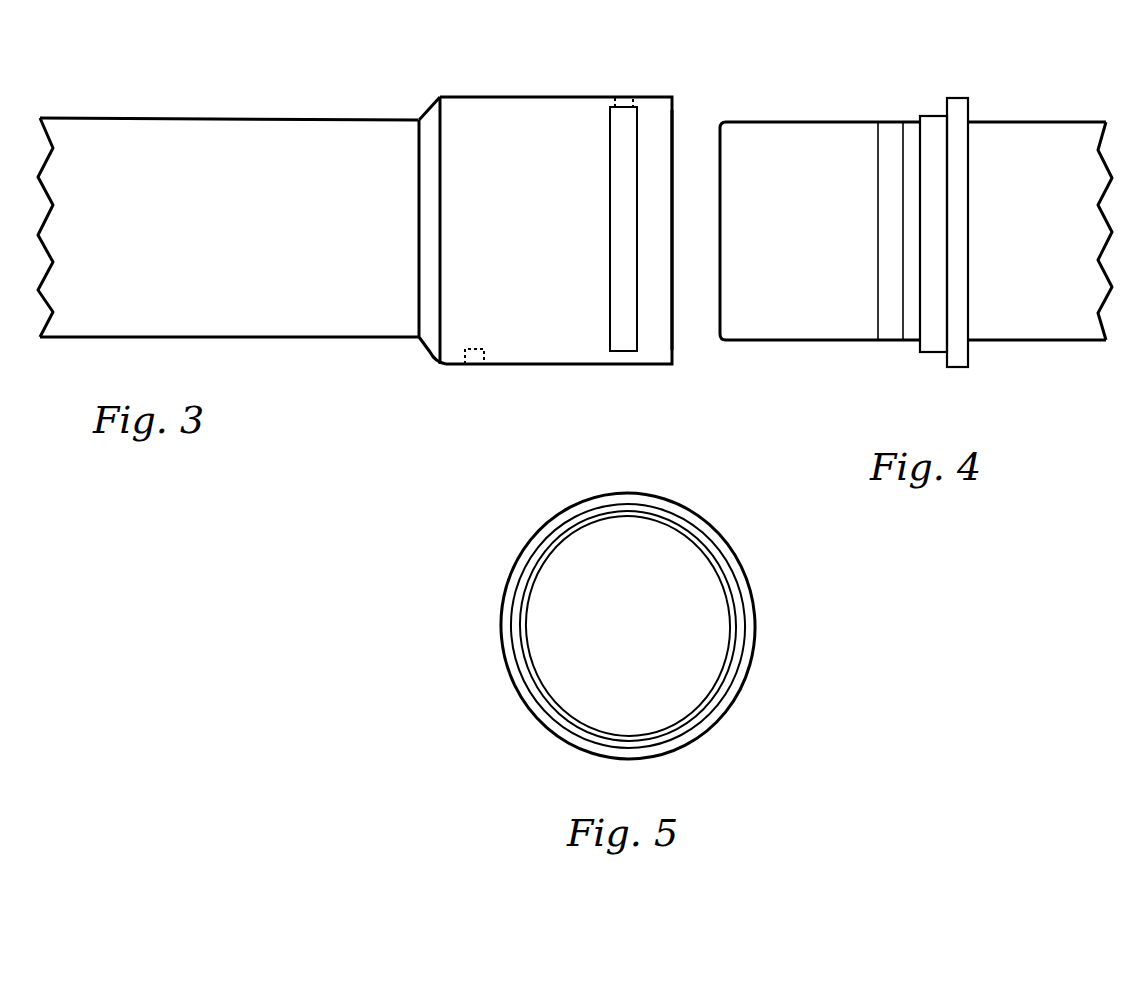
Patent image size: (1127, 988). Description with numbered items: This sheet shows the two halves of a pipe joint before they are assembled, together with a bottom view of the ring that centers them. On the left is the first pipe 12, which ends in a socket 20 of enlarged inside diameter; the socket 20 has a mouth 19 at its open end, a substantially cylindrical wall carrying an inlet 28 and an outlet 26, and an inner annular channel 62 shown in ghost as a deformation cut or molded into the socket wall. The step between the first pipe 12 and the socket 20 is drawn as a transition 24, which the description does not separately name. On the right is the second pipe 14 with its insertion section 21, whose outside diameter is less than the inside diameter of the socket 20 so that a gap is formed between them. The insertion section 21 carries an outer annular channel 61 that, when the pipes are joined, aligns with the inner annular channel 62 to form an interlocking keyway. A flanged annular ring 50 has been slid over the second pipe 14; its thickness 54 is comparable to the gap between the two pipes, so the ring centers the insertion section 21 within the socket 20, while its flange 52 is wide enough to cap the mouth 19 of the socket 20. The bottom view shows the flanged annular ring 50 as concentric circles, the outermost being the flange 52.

In FIG. 3, the first pipe 12 is at (178, 222).
In FIG. 4, the second pipe 14 is at (1029, 230).
In FIG. 3, the mouth 19 is at (668, 157).
In FIG. 3, the socket 20 is at (564, 239).
In FIG. 4, the insertion section 21 is at (816, 239).
In FIG. 3, the shoulder 24 is at (420, 338).
In FIG. 3, the outlet 26 is at (477, 365).
In FIG. 3, the inlet 28 is at (633, 97).
In FIG. 4, the flanged annular ring 50 is at (941, 102).
In FIG. 5, the flanged annular ring 50 is at (491, 677).
In FIG. 4, the flange 52 is at (958, 360).
In FIG. 5, the flange 52 is at (742, 710).
In FIG. 4, the thickness 54 is at (918, 342).
In FIG. 4, the outer annular channel 61 is at (883, 277).
In FIG. 3, the inner annular channel 62 is at (623, 285).